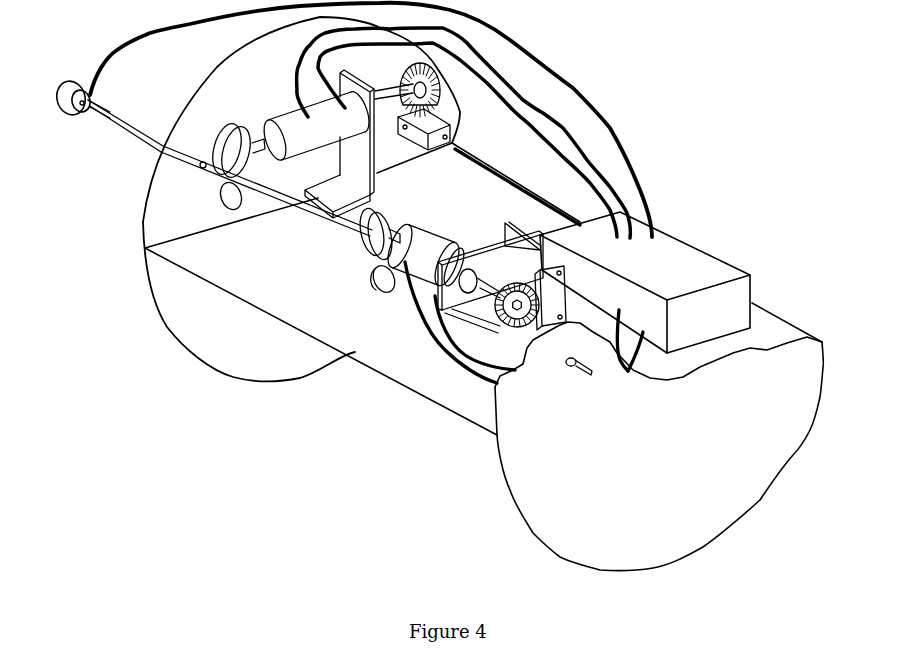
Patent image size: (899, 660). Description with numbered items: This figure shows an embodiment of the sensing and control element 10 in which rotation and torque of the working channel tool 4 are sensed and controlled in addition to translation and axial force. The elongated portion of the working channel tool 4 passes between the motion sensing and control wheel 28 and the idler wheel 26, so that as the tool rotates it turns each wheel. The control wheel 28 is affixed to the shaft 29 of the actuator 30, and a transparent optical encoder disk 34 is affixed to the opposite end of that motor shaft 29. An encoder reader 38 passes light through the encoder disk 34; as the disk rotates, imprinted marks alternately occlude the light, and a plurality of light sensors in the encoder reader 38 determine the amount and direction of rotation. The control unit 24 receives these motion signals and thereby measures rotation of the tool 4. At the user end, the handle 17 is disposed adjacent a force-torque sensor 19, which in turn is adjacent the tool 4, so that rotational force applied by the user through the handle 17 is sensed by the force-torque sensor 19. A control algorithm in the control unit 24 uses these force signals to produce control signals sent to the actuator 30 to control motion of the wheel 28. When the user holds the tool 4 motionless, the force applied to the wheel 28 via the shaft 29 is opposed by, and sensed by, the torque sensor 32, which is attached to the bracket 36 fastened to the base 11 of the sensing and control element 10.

The sensing and control element 10 is at (720, 555).
The base 11 is at (413, 392).
The working channel tool 4 is at (120, 117).
The handle 17 is at (63, 87).
The force-torque sensor 19 is at (86, 113).
The control unit 24 is at (693, 267).
The idler wheel 26 is at (373, 297).
The motion sensing and control wheel 28 is at (403, 212).
The shaft 29 is at (406, 226).
The actuator 30 is at (408, 265).
The torque sensor 32 is at (458, 250).
The transparent optical encoder disk 34 is at (503, 332).
The bracket 36 is at (505, 222).
The encoder reader 38 is at (567, 295).